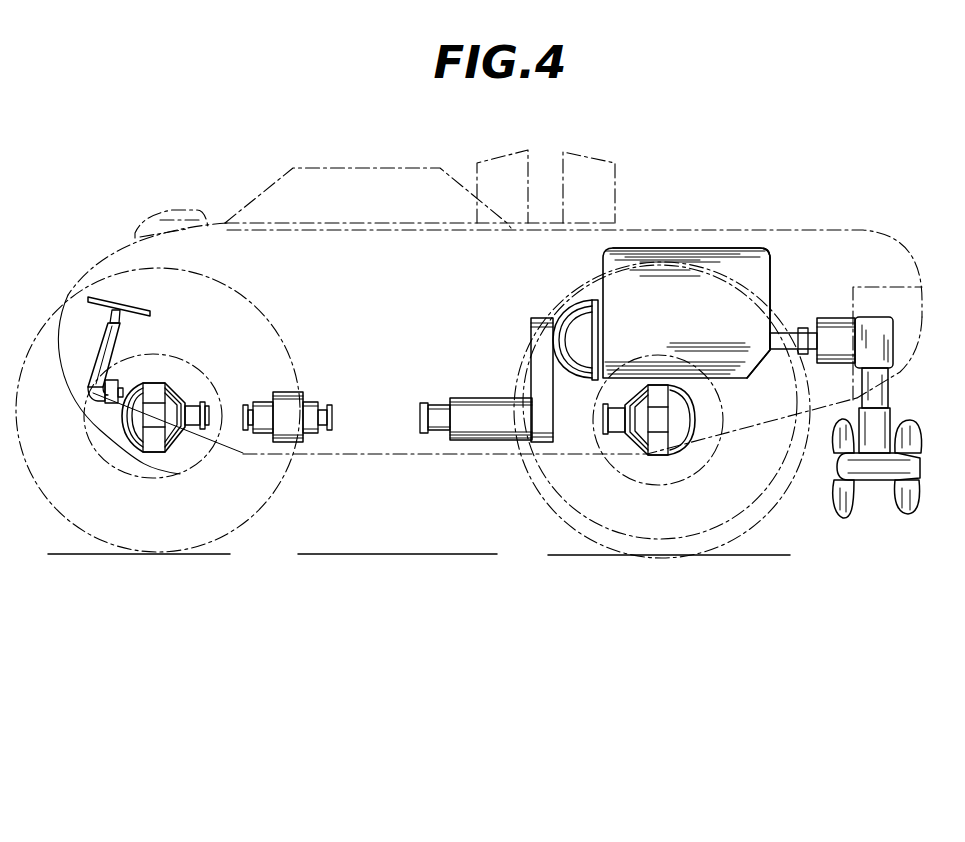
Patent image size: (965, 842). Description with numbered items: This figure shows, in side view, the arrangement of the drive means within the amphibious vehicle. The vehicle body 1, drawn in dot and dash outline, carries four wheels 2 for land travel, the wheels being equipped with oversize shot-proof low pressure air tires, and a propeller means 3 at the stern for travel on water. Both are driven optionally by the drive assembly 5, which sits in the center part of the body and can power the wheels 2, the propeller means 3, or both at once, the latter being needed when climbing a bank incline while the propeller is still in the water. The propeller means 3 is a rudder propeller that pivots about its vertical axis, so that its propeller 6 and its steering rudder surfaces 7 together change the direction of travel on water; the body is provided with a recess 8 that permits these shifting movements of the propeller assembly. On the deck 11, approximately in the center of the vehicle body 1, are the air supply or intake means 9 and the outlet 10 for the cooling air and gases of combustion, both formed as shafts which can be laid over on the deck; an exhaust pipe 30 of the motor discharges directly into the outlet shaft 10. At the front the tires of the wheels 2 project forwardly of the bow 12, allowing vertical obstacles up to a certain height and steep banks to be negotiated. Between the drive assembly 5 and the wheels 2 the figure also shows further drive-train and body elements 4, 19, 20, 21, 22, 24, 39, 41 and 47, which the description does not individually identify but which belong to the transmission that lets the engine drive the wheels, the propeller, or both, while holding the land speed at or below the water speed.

The vehicle body 1 is at (790, 243).
The wheels 2 is at (127, 457).
The propeller means 3 is at (887, 417).
The wheel 4 is at (256, 484).
The drive assembly 5 is at (642, 257).
The propeller 6 is at (843, 501).
The steering rudder surfaces 7 is at (903, 512).
The recess 8 is at (898, 300).
The air supply or intake means 9 is at (490, 170).
The outlet 10 is at (588, 167).
The deck 11 is at (715, 243).
The bow 12 is at (68, 293).
The clutch housing 19 is at (572, 313).
The transfer case 20 is at (531, 340).
The drive axis line 21 is at (382, 457).
The transmission 22 is at (463, 403).
The coupling 24 is at (302, 400).
The exhaust pipe 30 is at (772, 285).
The steering column 39 is at (126, 363).
The steering wheel 41 is at (105, 313).
The stern body portion 47 is at (912, 254).